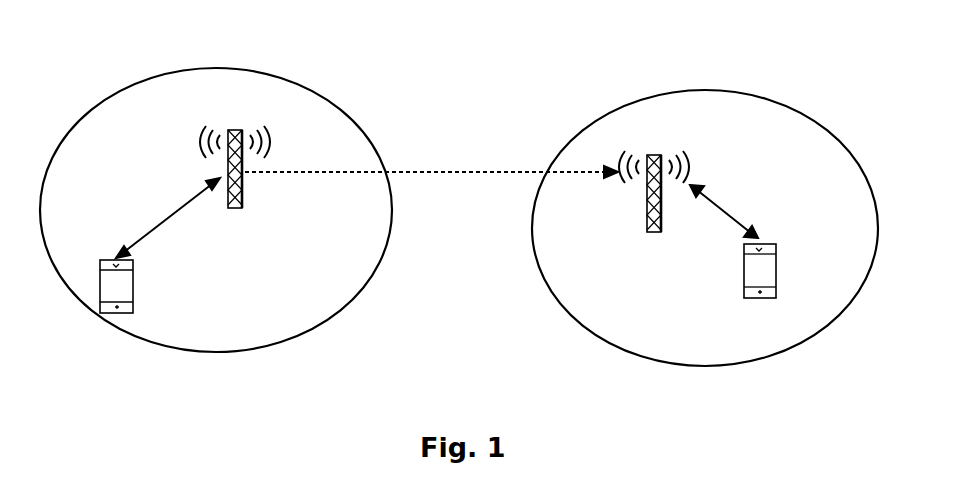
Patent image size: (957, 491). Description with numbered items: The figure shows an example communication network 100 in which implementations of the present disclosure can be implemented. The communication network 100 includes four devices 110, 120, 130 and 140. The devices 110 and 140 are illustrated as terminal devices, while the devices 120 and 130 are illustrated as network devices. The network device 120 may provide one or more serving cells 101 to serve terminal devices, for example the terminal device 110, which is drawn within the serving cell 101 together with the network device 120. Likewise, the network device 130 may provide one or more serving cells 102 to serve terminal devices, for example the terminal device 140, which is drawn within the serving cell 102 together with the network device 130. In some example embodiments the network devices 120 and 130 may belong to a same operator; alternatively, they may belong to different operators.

The communication network 100 is at (126, 40).
The serving cell 101 is at (273, 72).
The serving cell 102 is at (708, 92).
The device 110 is at (133, 290).
The device 120 is at (236, 128).
The device 130 is at (655, 152).
The device 140 is at (776, 272).